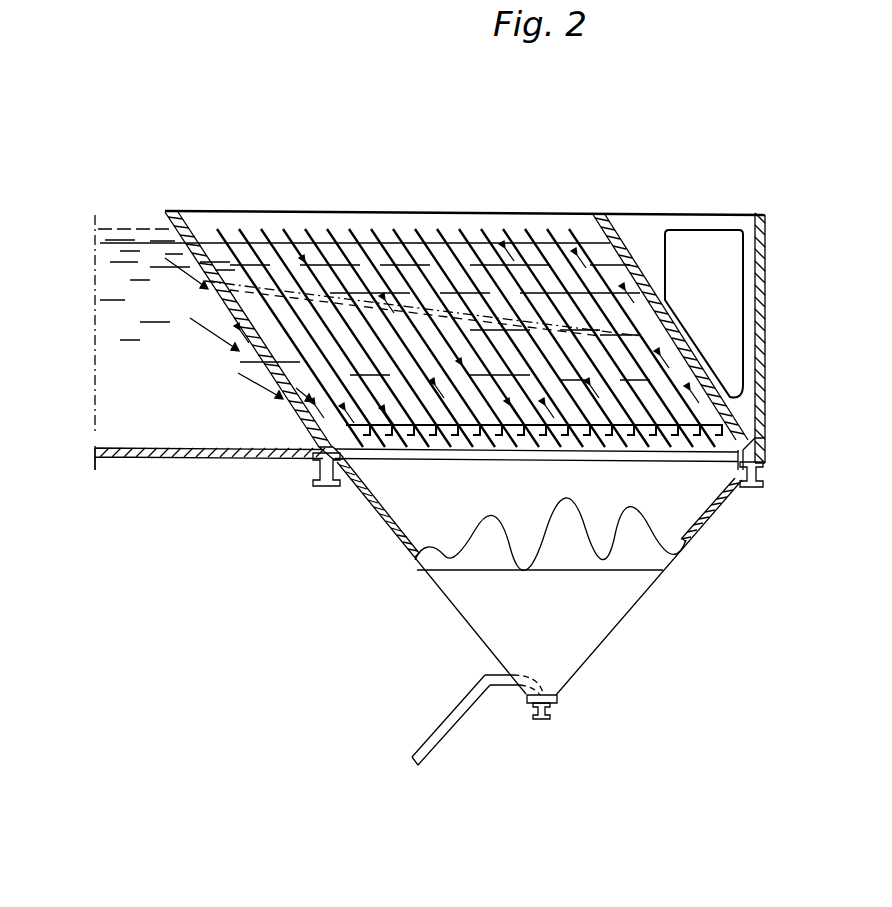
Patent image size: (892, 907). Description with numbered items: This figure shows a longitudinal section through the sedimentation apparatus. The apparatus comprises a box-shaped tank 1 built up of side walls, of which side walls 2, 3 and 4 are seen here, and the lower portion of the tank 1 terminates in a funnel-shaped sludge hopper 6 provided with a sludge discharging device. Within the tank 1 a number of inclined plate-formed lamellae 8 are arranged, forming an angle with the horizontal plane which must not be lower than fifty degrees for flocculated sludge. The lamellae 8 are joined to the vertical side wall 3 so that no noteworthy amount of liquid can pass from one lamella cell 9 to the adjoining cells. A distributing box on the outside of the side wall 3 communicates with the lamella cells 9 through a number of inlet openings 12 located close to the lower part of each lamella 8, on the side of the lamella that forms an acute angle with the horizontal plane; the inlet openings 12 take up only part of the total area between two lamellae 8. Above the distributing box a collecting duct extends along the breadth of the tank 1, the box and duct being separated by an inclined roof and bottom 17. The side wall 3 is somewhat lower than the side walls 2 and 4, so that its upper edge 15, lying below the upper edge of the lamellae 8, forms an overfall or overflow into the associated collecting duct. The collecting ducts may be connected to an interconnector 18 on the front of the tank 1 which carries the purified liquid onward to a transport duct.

The tank 1 is at (582, 205).
The side wall 2 is at (612, 243).
The side wall 3 is at (452, 277).
The side wall 4 is at (187, 222).
The sludge hopper 6 is at (565, 667).
The lamellae 8 is at (532, 237).
The lamella cell 9 is at (317, 233).
The inlet openings 12 is at (478, 440).
The upper edge 15 is at (252, 240).
The inclined roof and bottom 17 is at (392, 248).
The interconnector 18 is at (706, 243).